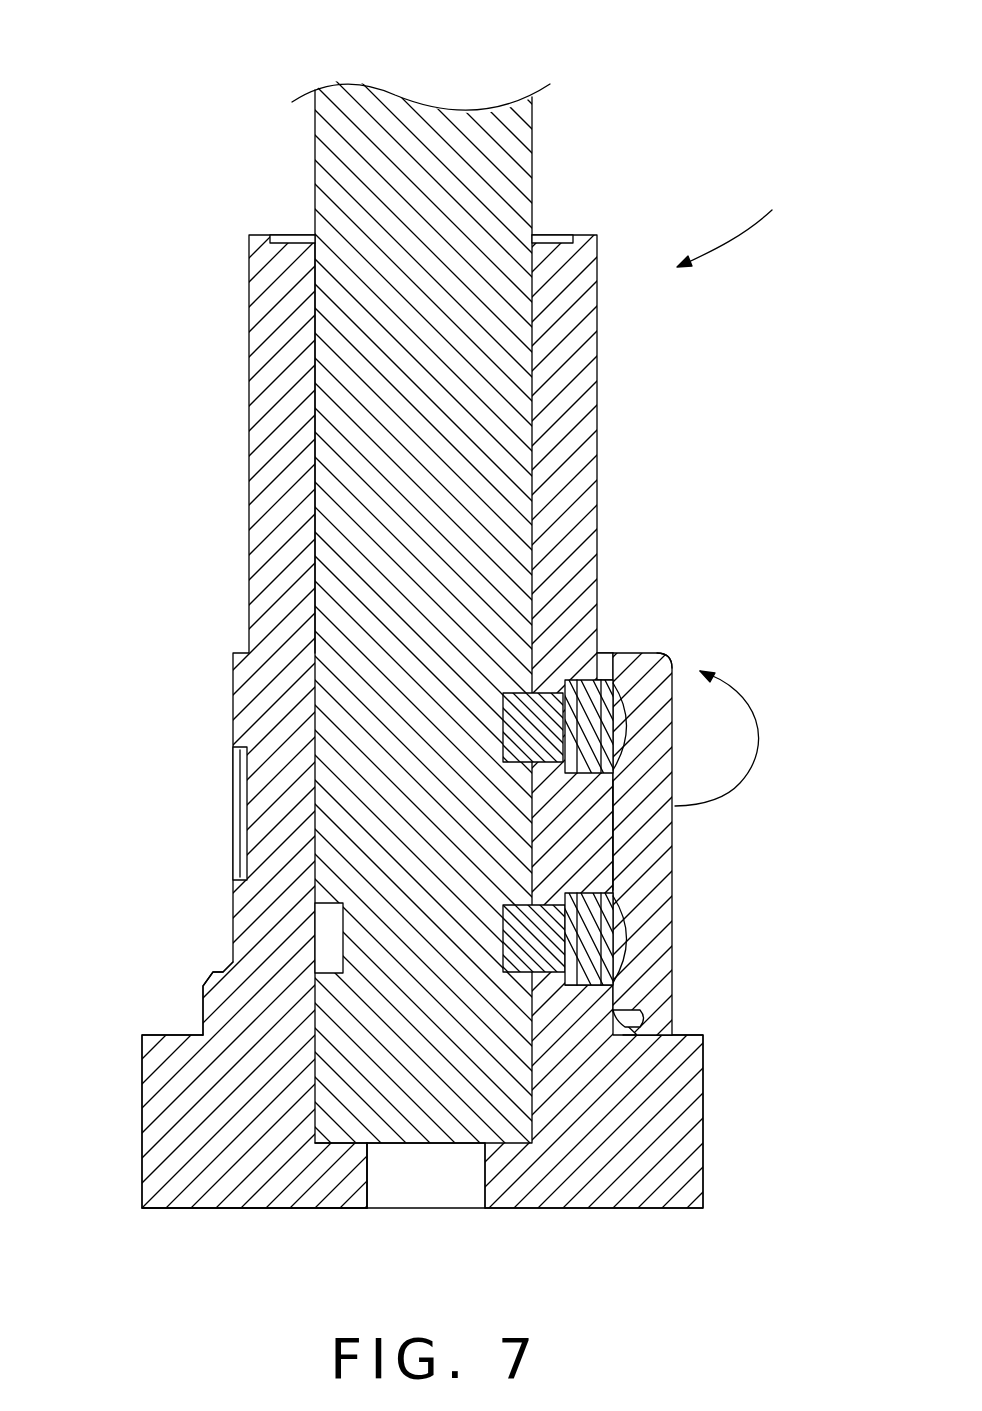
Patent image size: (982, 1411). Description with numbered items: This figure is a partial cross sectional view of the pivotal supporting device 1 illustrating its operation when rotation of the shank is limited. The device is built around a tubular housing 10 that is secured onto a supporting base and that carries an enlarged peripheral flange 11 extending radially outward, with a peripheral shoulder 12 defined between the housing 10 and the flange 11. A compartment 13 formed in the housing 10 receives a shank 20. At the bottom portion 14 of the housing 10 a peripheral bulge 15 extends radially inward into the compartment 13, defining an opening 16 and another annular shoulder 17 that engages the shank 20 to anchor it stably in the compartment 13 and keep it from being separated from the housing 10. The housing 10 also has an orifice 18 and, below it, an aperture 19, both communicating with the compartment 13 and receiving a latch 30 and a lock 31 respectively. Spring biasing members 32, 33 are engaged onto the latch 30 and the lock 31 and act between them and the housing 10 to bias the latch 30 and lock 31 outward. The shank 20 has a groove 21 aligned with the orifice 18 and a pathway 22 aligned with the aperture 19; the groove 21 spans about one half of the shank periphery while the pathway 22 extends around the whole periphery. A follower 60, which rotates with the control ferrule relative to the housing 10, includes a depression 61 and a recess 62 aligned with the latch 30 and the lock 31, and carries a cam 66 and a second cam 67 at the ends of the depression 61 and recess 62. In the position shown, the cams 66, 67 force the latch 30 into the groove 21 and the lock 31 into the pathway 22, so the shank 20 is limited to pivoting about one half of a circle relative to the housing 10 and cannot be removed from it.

The pivotal supporting device 1 is at (734, 220).
The housing 10 is at (278, 465).
The peripheral flange 11 is at (673, 1140).
The peripheral shoulder 12 is at (183, 1023).
The compartment 13 is at (330, 378).
The bottom portion 14 is at (170, 1185).
The peripheral bulge 15 is at (338, 1187).
The opening 16 is at (447, 1187).
The annular shoulder 17 is at (352, 1143).
The orifice 18 is at (592, 668).
The aperture 19 is at (572, 982).
The shank 20 is at (408, 163).
The groove 21 is at (505, 722).
The pathway 22 is at (500, 937).
The latch 30 is at (630, 725).
The lock 31 is at (637, 946).
The spring biasing member 32 is at (608, 680).
The spring biasing member 33 is at (623, 862).
The follower 60 is at (425, 843).
The depression 61 is at (635, 748).
The recess 62 is at (619, 928).
The cam 66 is at (668, 658).
The second cam 67 is at (633, 990).